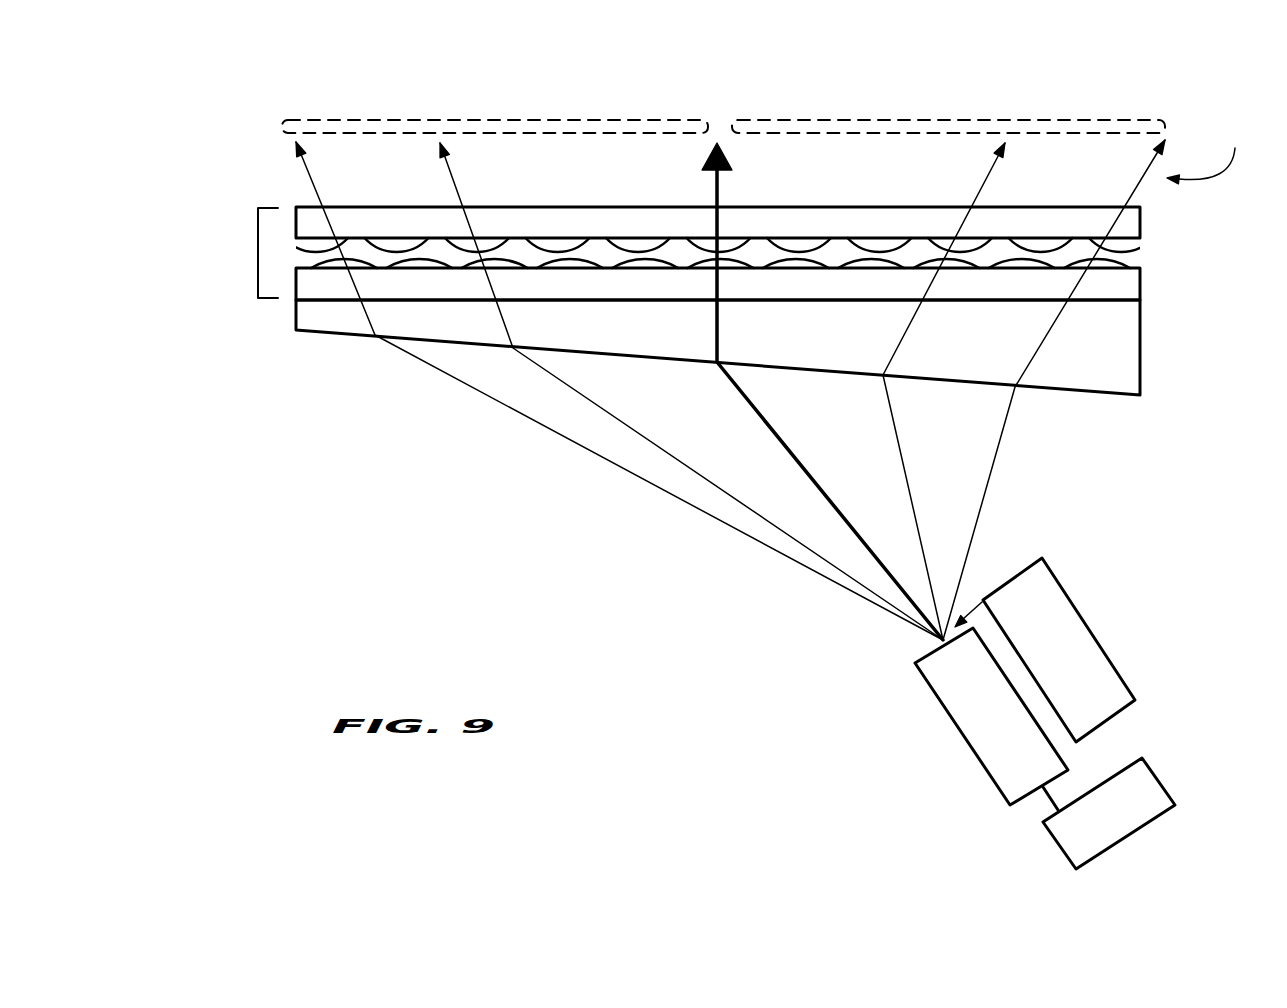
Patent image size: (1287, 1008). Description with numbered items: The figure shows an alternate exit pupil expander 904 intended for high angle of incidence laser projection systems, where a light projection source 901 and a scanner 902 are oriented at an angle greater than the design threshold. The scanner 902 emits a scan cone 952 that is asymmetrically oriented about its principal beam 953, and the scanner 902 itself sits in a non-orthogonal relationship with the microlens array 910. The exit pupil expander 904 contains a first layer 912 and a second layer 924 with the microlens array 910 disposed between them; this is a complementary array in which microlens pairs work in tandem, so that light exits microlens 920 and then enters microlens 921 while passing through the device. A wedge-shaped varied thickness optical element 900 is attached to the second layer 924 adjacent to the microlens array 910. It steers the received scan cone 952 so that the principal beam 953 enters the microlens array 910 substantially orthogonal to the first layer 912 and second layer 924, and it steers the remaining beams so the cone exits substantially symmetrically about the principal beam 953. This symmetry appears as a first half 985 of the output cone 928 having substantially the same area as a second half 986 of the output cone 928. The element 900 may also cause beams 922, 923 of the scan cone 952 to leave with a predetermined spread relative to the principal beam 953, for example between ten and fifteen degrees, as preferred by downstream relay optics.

The varied thickness optical element 900 is at (1110, 348).
The light projection source 901 is at (1058, 651).
The scanner 902 is at (933, 676).
The exit pupil expander 904 is at (258, 252).
The microlens array 910 is at (780, 247).
The first layer 912 is at (1132, 218).
The microlens 920 is at (866, 261).
The microlens 921 is at (876, 243).
The beam 922 is at (668, 497).
The beam 923 is at (626, 427).
The second layer 924 is at (1127, 283).
The output cone 928 is at (1212, 154).
The scan cone 952 is at (1029, 438).
The principal beam 953 is at (783, 447).
The first half of the output cone 985 is at (529, 123).
The second half of the output cone 986 is at (900, 125).